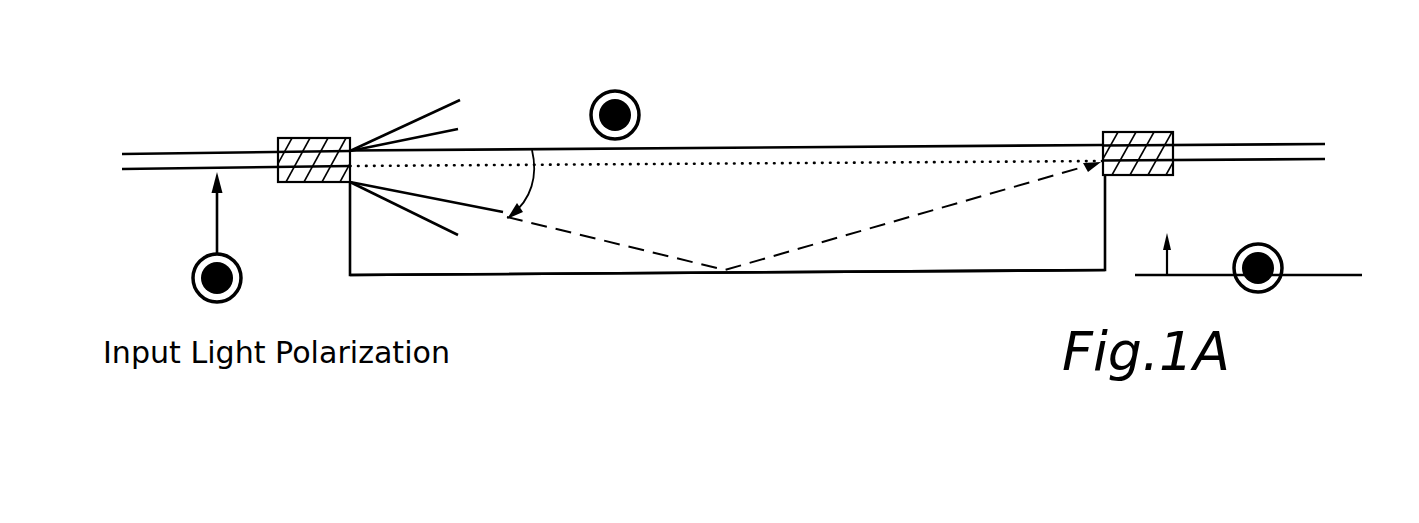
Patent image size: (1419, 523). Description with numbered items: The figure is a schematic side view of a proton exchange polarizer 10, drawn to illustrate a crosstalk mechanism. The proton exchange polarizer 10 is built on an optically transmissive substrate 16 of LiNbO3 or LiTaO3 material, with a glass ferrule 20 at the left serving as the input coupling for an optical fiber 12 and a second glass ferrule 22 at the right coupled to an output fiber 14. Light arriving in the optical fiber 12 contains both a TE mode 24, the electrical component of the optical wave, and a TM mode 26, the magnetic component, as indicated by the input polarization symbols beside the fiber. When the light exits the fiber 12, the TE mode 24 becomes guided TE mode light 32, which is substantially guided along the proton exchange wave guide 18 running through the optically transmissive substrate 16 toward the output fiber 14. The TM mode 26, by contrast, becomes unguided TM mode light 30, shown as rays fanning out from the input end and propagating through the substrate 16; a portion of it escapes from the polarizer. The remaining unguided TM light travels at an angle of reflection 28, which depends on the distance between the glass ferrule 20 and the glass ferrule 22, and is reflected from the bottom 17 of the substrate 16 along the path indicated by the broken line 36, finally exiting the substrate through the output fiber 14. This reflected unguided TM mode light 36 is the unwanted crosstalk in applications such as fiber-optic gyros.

The proton exchange polarizer 10 is at (1187, 27).
The optical fiber 12 is at (152, 170).
The output fiber 14 is at (1243, 143).
The optically transmissive substrate 16 is at (923, 257).
The bottom of the substrate 17 is at (582, 275).
The proton exchange wave guide 18 is at (1035, 157).
The glass ferrule 20 is at (330, 138).
The glass ferrule 22 is at (1137, 132).
The TE mode 24 is at (283, 280).
The TM mode 26 is at (185, 228).
The angle of reflection 28 is at (537, 185).
The unguided TM mode light 30 is at (422, 128).
The guided TE mode light 32 is at (720, 98).
The broken line (reflected unguided TM mode light) 36 is at (937, 212).